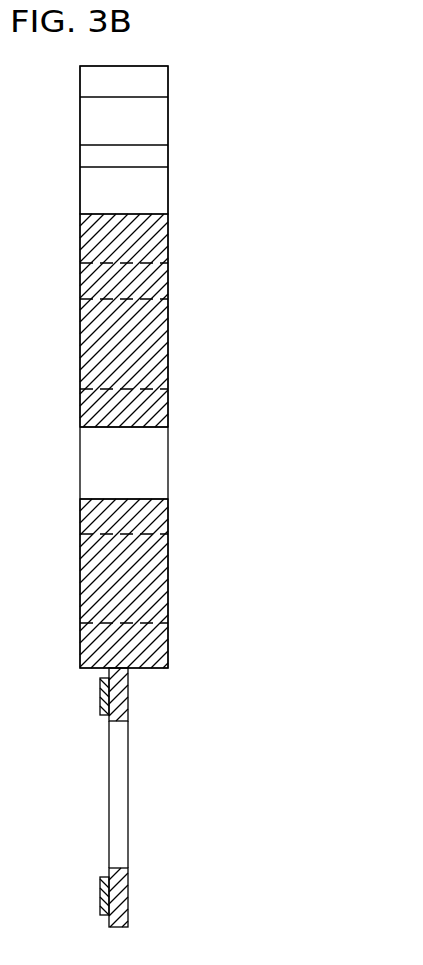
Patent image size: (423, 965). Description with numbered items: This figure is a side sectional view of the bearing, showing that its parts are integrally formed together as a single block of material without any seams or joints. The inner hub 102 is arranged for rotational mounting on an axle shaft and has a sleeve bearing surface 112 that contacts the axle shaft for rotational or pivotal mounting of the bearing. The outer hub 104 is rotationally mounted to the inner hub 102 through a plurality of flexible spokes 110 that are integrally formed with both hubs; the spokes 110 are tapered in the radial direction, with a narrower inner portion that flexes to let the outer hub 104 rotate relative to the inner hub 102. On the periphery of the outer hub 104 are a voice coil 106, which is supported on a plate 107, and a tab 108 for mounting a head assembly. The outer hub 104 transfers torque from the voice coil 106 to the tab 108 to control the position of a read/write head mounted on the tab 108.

The inner hub 102 is at (172, 412).
The outer hub 104 is at (172, 241).
The voice coil 106 is at (102, 895).
The plate 107 is at (128, 890).
The tab 108 is at (168, 133).
The flexible spokes 110 is at (167, 367).
The sleeve bearing surface 112 is at (132, 499).